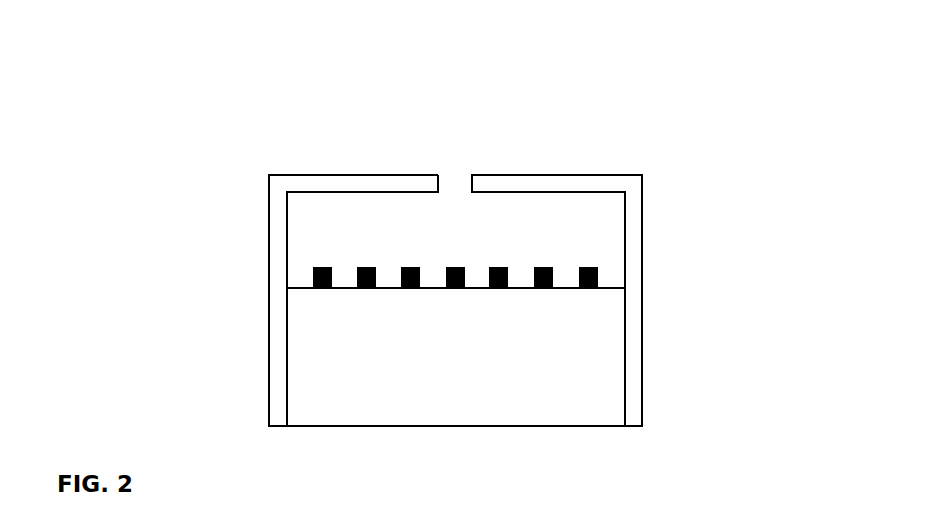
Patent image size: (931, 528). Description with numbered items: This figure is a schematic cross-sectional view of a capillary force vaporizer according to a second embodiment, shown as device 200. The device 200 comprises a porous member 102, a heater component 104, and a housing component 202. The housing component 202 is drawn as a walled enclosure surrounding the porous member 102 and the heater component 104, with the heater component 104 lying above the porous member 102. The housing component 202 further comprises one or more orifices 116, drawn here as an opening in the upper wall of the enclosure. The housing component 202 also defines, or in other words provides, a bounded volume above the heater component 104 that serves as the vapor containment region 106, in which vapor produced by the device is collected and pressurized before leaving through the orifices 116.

The device 200 is at (171, 56).
The housing component 202 is at (630, 237).
The orifice 116 is at (454, 185).
The vapor containment region 106 is at (368, 243).
The heater component 104 is at (543, 290).
The porous member 102 is at (330, 351).